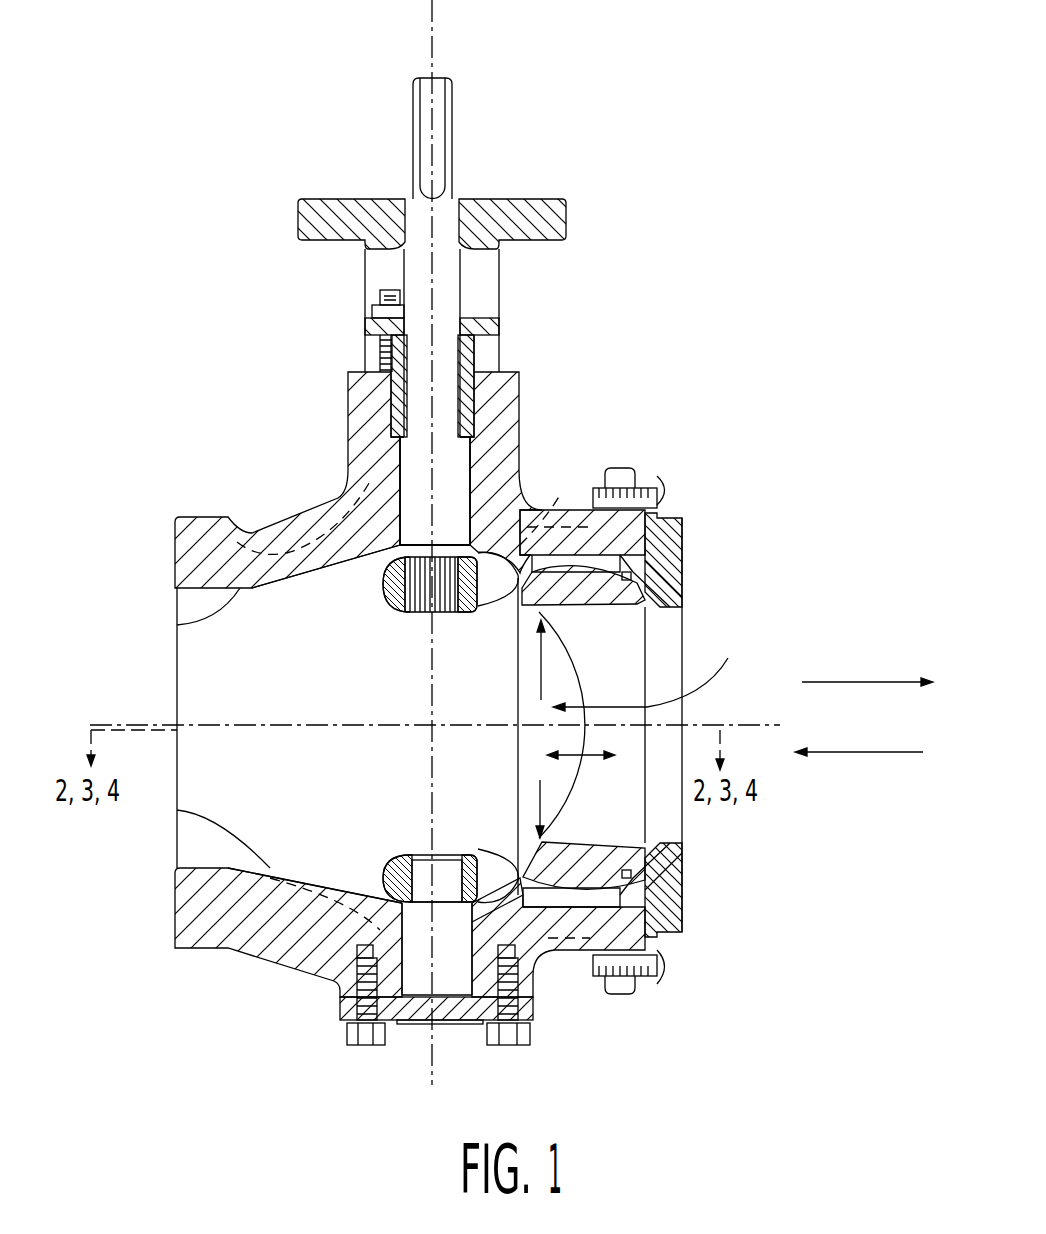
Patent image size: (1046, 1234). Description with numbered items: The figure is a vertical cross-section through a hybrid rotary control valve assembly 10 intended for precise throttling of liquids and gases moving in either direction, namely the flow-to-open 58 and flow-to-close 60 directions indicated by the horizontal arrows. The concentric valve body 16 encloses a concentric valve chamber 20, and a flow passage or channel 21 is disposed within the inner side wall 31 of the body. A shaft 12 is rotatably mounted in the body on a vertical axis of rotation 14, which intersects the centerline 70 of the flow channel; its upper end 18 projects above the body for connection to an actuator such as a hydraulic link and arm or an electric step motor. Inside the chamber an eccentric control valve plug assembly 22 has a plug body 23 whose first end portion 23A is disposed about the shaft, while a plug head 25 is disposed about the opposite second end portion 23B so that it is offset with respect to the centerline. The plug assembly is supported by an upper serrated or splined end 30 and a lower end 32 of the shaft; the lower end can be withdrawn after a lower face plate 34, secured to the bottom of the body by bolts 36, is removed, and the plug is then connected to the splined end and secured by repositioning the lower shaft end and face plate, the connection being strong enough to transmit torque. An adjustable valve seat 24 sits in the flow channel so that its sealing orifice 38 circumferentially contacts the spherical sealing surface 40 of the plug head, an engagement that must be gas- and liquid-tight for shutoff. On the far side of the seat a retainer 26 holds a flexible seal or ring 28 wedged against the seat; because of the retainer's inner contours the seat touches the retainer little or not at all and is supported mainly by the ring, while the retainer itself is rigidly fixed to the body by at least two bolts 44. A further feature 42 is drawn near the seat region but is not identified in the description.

The hybrid rotary control valve assembly 10 is at (274, 371).
The shaft 12 is at (422, 270).
The vertical axis of rotation 14 is at (436, 25).
The concentric valve body 16 is at (311, 512).
The upper end of shaft 18 is at (455, 128).
The concentric valve chamber 20 is at (316, 666).
The flow passage or channel 21 is at (593, 760).
The eccentric control valve plug assembly 22 is at (645, 667).
The plug body 23 is at (408, 729).
The first end portion of plug body 23A is at (403, 615).
The second end portion of plug body 23B is at (463, 615).
The adjustable valve seat 24 is at (629, 728).
The plug head 25 is at (520, 680).
The retainer 26 is at (680, 522).
The flexible seal or ring 28 is at (680, 563).
The upper serrated or splined end of shaft 30 is at (458, 497).
The inner side wall of valve body 31 is at (177, 627).
The lower end of shaft 32 is at (420, 972).
The lower face plate 34 is at (465, 1024).
The bolts 36 is at (357, 1012).
The sealing orifice 38 is at (540, 810).
The spherical sealing surface 40 is at (577, 682).
The clearance gap 42 is at (522, 553).
The bolts 44 is at (665, 487).
The flow-to-open direction 58 is at (896, 752).
The flow-to-close direction 60 is at (890, 682).
The centerline of flow channel 70 is at (196, 722).